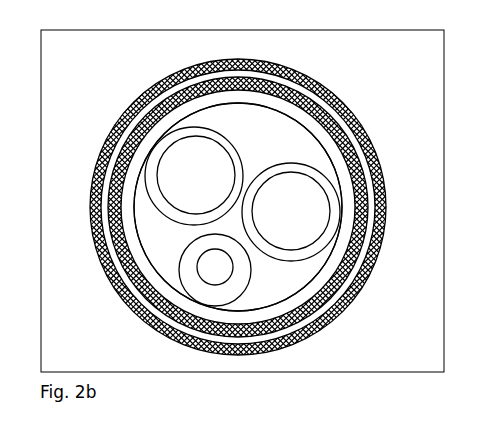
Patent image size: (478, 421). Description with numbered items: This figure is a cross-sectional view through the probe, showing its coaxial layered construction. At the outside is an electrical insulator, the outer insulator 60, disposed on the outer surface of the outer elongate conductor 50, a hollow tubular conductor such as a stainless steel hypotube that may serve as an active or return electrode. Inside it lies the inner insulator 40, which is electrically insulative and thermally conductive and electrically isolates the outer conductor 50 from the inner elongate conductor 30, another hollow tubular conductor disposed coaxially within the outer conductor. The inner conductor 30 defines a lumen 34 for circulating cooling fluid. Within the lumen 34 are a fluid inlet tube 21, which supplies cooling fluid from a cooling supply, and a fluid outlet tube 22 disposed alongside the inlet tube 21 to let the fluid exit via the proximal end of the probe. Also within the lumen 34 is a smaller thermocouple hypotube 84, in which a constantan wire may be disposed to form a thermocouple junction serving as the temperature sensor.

The outer insulator 60 is at (238, 195).
The outer elongate conductor 50 is at (248, 199).
The inner insulator 40 is at (258, 204).
The inner elongate conductor 30 is at (267, 207).
The fluid inlet tube 21 is at (281, 207).
The fluid outlet tube 22 is at (153, 148).
The lumen 34 is at (317, 252).
The thermocouple hypotube 84 is at (174, 294).